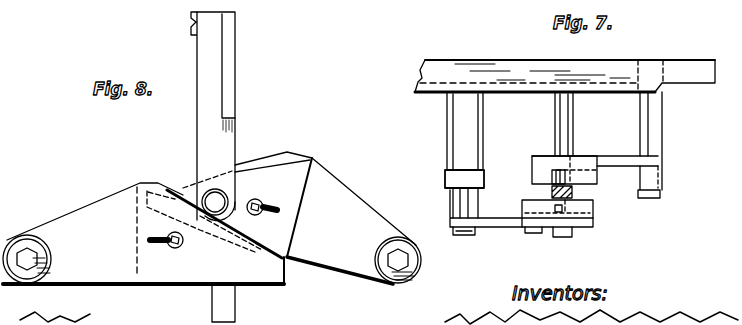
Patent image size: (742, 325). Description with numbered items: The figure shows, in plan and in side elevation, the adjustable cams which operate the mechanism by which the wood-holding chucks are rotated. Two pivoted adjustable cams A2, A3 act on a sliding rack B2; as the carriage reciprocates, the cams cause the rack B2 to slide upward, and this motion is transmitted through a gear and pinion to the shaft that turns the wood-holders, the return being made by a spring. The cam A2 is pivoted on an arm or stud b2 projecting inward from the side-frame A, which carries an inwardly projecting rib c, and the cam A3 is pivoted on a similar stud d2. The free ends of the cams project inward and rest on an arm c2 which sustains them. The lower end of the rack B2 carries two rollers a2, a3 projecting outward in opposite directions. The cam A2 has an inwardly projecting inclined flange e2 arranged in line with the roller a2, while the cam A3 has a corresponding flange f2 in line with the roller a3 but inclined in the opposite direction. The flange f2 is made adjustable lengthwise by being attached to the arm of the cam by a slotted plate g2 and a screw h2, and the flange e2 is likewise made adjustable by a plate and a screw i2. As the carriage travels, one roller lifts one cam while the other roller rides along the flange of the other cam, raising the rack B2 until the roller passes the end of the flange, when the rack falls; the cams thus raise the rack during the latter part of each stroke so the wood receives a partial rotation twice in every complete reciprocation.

In FIG. 7, the side-frame A is at (565, 63).
In FIG. 7, the rib c is at (512, 84).
In FIG. 8, the pivoted adjustable cam A2 is at (112, 261).
In FIG. 7, the pivoted adjustable cam A2 is at (513, 252).
In FIG. 8, the pivoted adjustable cam A3 is at (341, 249).
In FIG. 7, the pivoted adjustable cam A3 is at (546, 160).
In FIG. 8, the sliding rack B2 is at (228, 92).
In FIG. 7, the sliding rack B2 is at (575, 193).
In FIG. 8, the roller a2 is at (215, 188).
In FIG. 7, the roller a2 is at (556, 206).
In FIG. 7, the roller a3 is at (556, 178).
In FIG. 8, the arm or stud b2 is at (27, 275).
In FIG. 7, the arm or stud b2 is at (455, 130).
In FIG. 8, the arm c2 is at (235, 303).
In FIG. 7, the arm c2 is at (564, 240).
In FIG. 8, the stud d2 is at (412, 272).
In FIG. 7, the stud d2 is at (662, 133).
In FIG. 8, the inclined flange e2 is at (178, 205).
In FIG. 7, the inclined flange e2 is at (522, 207).
In FIG. 8, the projecting flange f2 is at (255, 162).
In FIG. 7, the projecting flange f2 is at (588, 175).
In FIG. 8, the slotted plate g2 is at (293, 207).
In FIG. 8, the screw h2 is at (262, 219).
In FIG. 8, the screw i2 is at (175, 249).